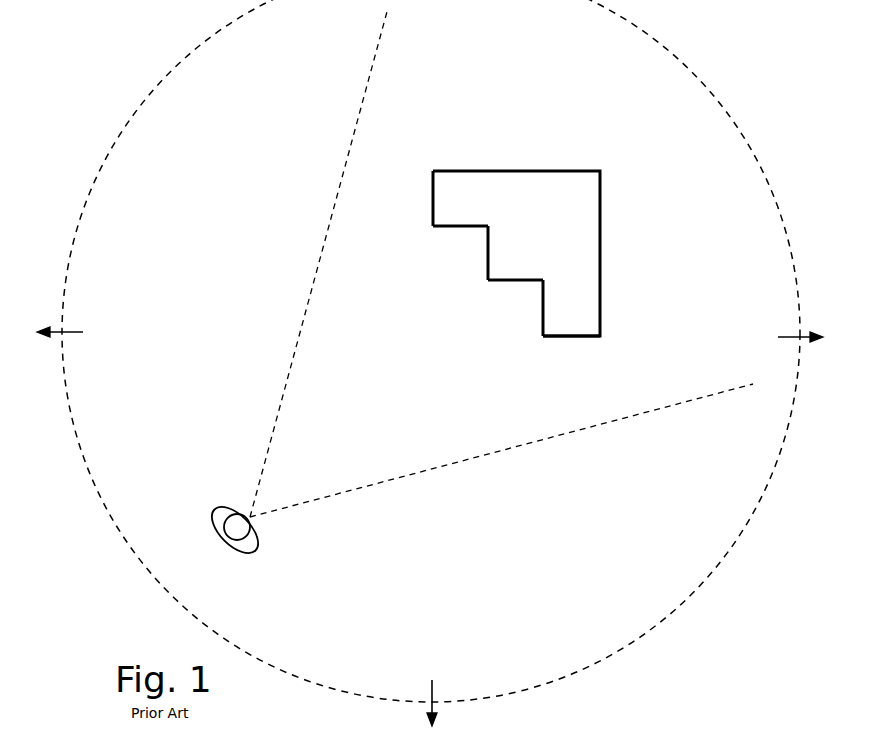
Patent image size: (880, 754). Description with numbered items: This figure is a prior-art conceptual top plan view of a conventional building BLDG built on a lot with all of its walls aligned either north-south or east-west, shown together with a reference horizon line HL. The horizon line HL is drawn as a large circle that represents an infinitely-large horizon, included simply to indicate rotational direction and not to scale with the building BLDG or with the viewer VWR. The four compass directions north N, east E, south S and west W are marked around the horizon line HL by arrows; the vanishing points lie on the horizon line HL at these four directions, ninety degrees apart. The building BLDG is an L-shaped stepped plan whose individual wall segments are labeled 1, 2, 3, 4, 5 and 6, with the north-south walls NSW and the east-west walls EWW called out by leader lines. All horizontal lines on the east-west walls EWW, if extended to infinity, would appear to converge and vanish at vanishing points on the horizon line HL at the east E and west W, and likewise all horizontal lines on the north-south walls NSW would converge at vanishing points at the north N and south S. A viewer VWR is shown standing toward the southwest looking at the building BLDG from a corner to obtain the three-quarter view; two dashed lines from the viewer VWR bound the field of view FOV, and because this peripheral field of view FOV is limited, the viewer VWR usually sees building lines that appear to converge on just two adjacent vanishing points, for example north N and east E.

The building wall 1 (north-south facing wall segment) 1 is at (431, 192).
The building wall 2 (east-west facing wall segment) 2 is at (459, 229).
The building wall 3 (north-south facing wall segment) 3 is at (485, 265).
The building wall 4 (east-west facing wall segment) 4 is at (496, 283).
The building wall 5 (north-south facing wall segment) 5 is at (541, 300).
The building wall 6 (east-west facing wall segment) 6 is at (556, 339).
The horizon line HL is at (108, 150).
The building BLDG is at (501, 236).
The north-south wall NSW is at (487, 248).
The east-west wall EWW is at (504, 281).
The field of view FOV is at (317, 498).
The viewer VWR is at (262, 553).
The north N is at (437, 12).
The south S is at (432, 688).
The east E is at (790, 337).
The west W is at (74, 332).